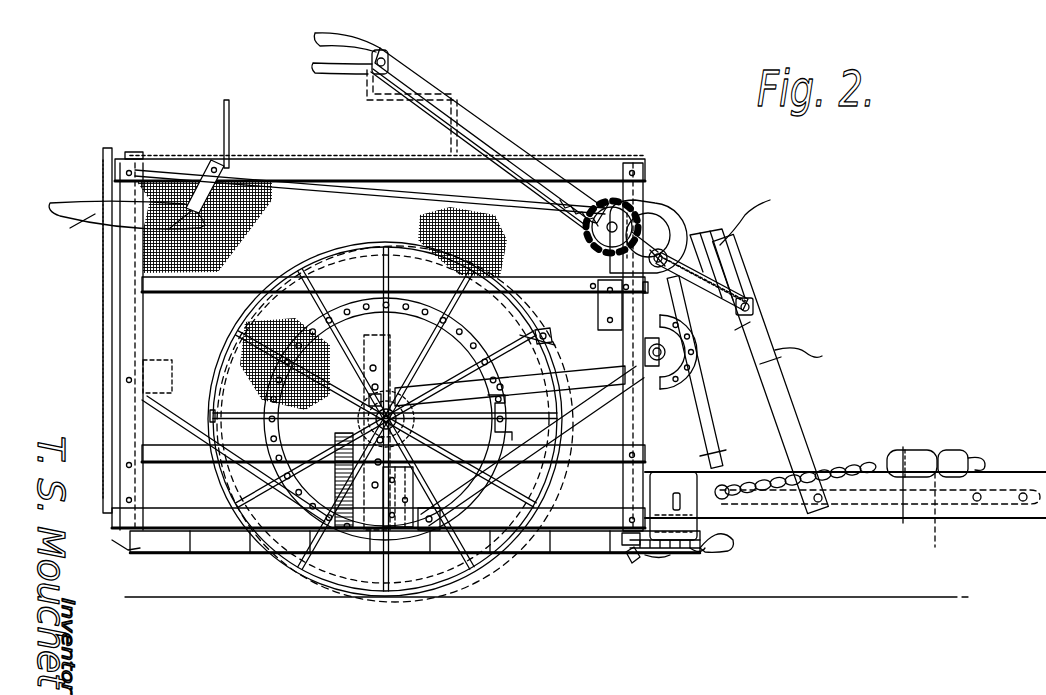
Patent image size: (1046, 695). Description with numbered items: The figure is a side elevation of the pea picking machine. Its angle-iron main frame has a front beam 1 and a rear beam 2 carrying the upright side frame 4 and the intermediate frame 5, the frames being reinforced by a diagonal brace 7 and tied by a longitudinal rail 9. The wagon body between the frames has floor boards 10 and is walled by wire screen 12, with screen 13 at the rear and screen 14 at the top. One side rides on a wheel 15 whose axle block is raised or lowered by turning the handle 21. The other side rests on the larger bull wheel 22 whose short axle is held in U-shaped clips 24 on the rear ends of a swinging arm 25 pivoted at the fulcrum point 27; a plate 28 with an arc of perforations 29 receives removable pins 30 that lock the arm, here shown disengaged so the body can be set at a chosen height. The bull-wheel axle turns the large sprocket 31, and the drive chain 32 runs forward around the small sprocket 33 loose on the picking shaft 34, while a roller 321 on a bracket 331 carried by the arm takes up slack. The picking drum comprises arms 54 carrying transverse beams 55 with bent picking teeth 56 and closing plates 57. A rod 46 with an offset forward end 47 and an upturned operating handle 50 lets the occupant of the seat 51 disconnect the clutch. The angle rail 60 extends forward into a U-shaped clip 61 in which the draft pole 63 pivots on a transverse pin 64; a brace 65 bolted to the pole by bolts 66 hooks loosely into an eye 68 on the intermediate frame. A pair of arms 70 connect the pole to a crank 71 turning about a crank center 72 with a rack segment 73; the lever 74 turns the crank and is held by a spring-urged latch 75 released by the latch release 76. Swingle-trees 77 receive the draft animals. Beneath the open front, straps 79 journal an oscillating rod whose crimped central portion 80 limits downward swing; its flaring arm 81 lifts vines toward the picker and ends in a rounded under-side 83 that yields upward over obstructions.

The front beam 1 is at (625, 548).
The rear beam 2 is at (126, 552).
The side frame 4 is at (234, 279).
The intermediate frame 5 is at (588, 164).
The diagonal brace 7 is at (178, 405).
The rail 9 is at (173, 462).
The floor boards 10 is at (182, 552).
The screen wall 12 is at (258, 182).
The screen 13 is at (150, 380).
The screen 14 is at (244, 160).
The wheel 15 is at (487, 600).
The handle 21 is at (378, 101).
The second wheel 22 is at (305, 545).
The U-shaped clips 24 is at (412, 425).
The swinging arm 25 is at (526, 388).
The fulcrum point 27 is at (625, 366).
The plate 28 is at (390, 500).
The perforations 29 is at (418, 530).
The pins or bolts 30 is at (400, 382).
The large sprocket 31 is at (497, 434).
The drive chain 32 is at (755, 283).
The roller 321 is at (548, 332).
The small sprocket 33 is at (692, 337).
The bracket 331 is at (541, 328).
The picking shaft 34 is at (678, 356).
The rod 46 is at (393, 185).
The forward end 47 is at (668, 230).
The operating handle 50 is at (224, 104).
The seat 51 is at (62, 216).
The drum arms 54 is at (700, 425).
The transverse beams 55 is at (735, 250).
The picking teeth 56 is at (758, 204).
The plates 57 is at (748, 262).
The angle rail 60 is at (540, 530).
The U-shaped clip 61 is at (705, 552).
The draft pole 63 is at (1031, 471).
The transverse pin 64 is at (673, 478).
The brace 65 is at (938, 521).
The bolts 66 is at (1022, 502).
The eye 68 is at (643, 483).
The arms 70 is at (800, 432).
The crank 71 is at (697, 266).
The crank center 72 is at (684, 250).
The rack segment 73 is at (648, 205).
The lever 74 is at (497, 140).
The latch 75 is at (606, 212).
The latch release 76 is at (334, 72).
The swingle-trees 77 is at (965, 450).
The straps 79 is at (656, 560).
The crimped central portion 80 is at (635, 562).
The arm 81 is at (690, 552).
The rounded under-sides 83 is at (733, 547).